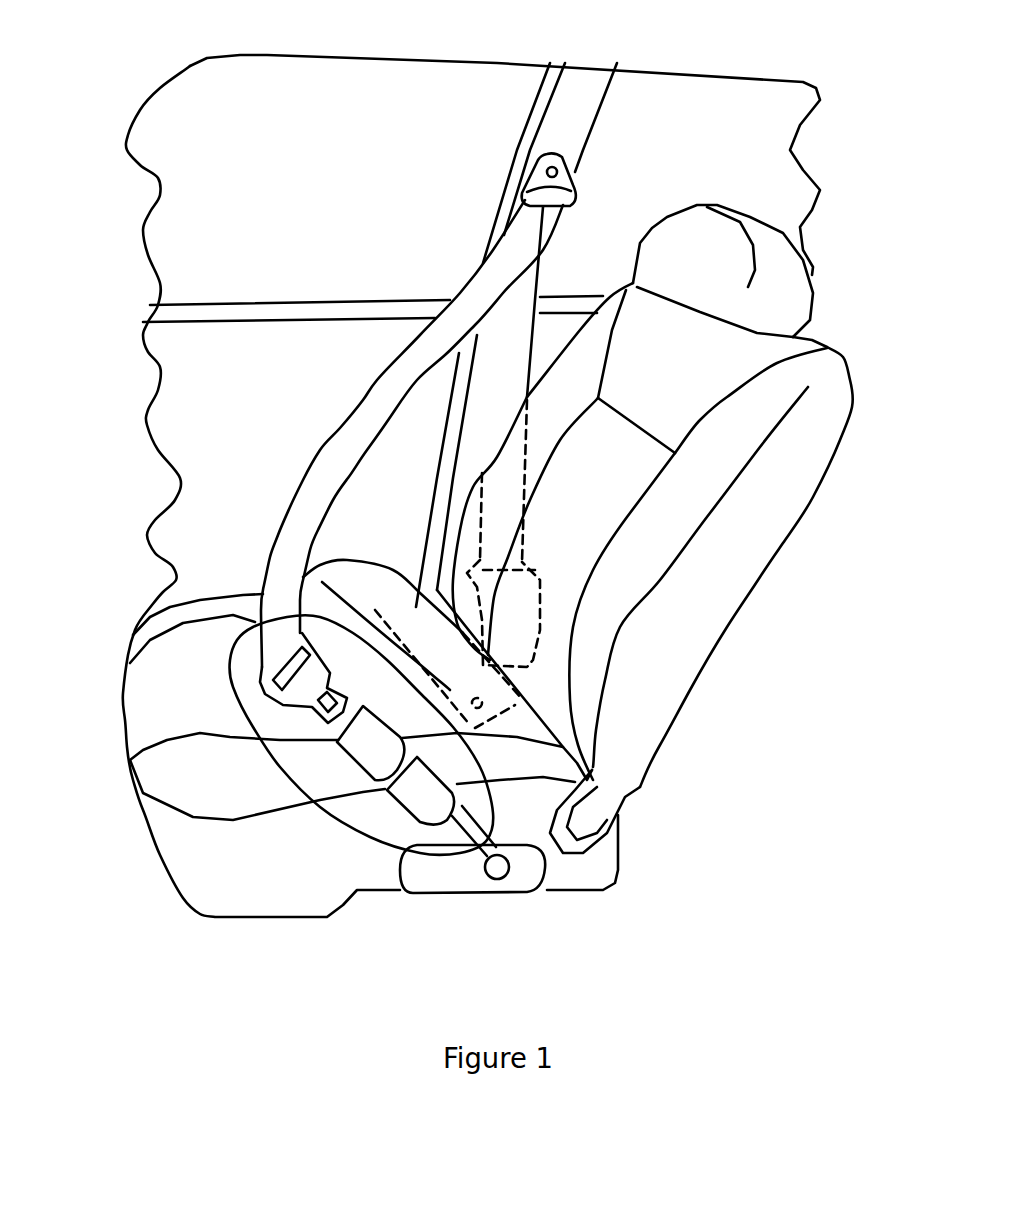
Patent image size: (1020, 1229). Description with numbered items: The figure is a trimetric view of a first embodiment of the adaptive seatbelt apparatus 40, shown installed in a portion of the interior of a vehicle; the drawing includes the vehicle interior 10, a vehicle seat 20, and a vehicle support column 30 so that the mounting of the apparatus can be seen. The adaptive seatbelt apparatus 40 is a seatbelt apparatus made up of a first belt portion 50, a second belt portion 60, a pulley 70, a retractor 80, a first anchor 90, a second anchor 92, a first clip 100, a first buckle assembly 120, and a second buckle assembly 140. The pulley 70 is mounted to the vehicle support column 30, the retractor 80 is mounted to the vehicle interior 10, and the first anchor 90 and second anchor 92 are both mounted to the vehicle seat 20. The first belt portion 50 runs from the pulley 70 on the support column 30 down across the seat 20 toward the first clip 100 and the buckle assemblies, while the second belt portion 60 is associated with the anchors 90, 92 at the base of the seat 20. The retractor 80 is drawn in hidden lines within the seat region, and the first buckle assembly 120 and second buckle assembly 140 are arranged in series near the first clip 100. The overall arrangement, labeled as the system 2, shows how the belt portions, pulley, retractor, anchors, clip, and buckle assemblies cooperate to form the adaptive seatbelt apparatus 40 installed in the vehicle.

The seat belt system 2 is at (167, 686).
The vehicle interior 10 is at (471, 472).
The vehicle seat 20 is at (491, 529).
The vehicle support column 30 is at (573, 322).
The adaptive seatbelt apparatus 40 is at (296, 707).
The first belt portion 50 is at (331, 433).
The second belt portion 60 is at (454, 873).
The pulley 70 is at (483, 109).
The retractor 80 is at (598, 579).
The first anchor 90 is at (573, 746).
The second anchor 92 is at (538, 894).
The first clip 100 is at (212, 735).
The first buckle assembly 120 is at (255, 823).
The second buckle assembly 140 is at (317, 869).